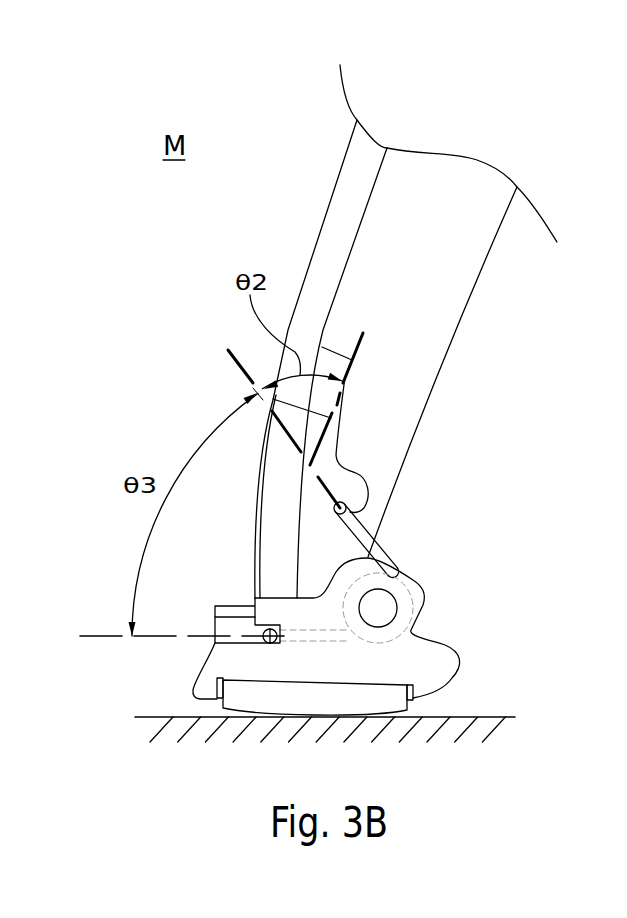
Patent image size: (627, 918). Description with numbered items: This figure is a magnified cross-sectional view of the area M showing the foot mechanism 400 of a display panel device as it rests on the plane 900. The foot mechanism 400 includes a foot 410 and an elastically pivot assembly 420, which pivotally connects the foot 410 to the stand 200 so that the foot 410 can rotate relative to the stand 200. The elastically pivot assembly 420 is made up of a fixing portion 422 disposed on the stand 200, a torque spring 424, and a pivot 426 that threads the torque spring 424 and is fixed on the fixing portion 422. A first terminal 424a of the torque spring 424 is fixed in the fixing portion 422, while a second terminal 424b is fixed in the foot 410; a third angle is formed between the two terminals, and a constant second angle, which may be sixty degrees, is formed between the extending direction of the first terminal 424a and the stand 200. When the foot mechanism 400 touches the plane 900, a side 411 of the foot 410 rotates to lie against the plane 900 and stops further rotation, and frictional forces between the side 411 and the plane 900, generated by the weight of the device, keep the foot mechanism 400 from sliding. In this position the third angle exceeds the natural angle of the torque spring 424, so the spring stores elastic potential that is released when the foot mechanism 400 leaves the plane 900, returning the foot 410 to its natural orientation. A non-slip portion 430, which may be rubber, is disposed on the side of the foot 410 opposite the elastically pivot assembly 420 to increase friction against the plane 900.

The stand 200 is at (457, 287).
The foot mechanism 400 is at (470, 433).
The foot 410 is at (430, 657).
The side of the foot 411 is at (201, 715).
The elastically pivot assembly 420 is at (542, 462).
The fixing portion 422 is at (355, 495).
The torque spring 424 is at (392, 580).
The first terminal of the torque spring 424a is at (375, 540).
The second terminal of the torque spring 424b is at (292, 638).
The pivot 426 is at (385, 607).
The non-slip portion 430 is at (423, 698).
The plane 900 is at (519, 710).